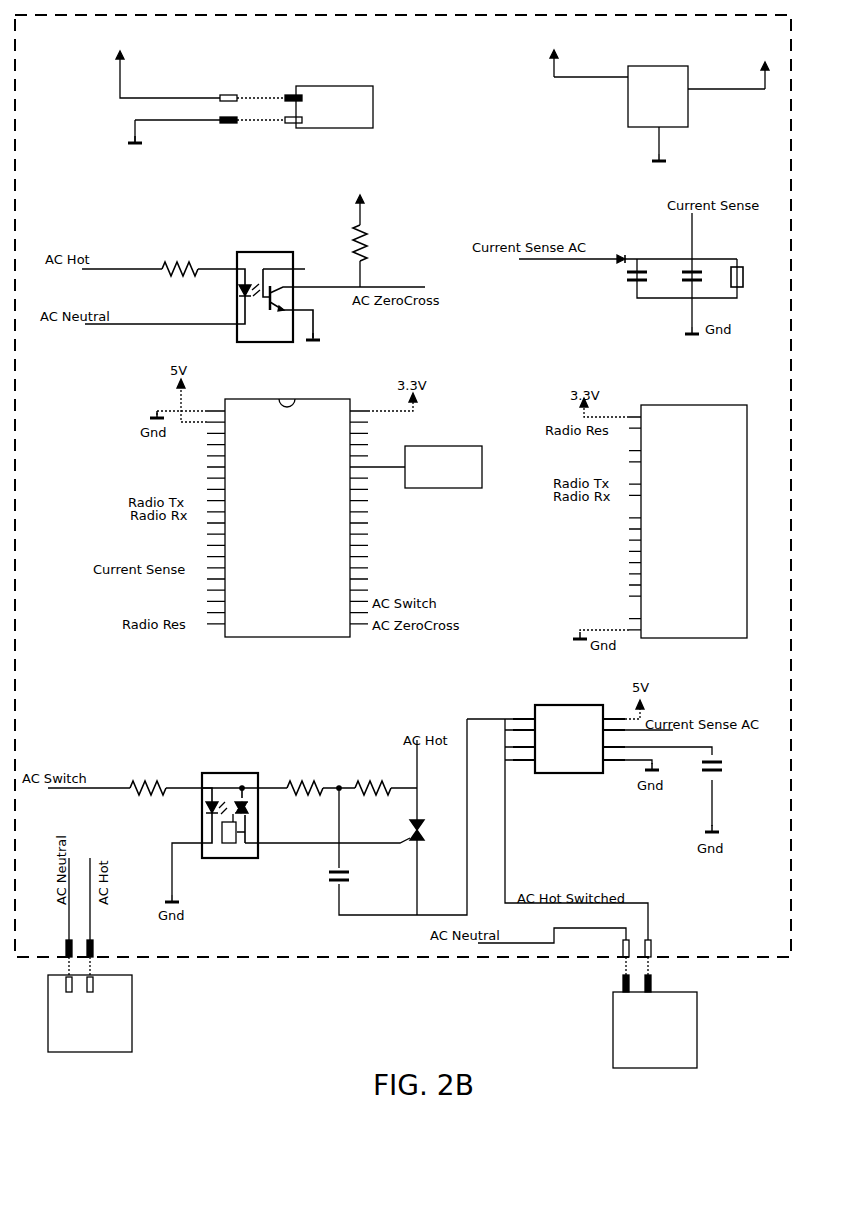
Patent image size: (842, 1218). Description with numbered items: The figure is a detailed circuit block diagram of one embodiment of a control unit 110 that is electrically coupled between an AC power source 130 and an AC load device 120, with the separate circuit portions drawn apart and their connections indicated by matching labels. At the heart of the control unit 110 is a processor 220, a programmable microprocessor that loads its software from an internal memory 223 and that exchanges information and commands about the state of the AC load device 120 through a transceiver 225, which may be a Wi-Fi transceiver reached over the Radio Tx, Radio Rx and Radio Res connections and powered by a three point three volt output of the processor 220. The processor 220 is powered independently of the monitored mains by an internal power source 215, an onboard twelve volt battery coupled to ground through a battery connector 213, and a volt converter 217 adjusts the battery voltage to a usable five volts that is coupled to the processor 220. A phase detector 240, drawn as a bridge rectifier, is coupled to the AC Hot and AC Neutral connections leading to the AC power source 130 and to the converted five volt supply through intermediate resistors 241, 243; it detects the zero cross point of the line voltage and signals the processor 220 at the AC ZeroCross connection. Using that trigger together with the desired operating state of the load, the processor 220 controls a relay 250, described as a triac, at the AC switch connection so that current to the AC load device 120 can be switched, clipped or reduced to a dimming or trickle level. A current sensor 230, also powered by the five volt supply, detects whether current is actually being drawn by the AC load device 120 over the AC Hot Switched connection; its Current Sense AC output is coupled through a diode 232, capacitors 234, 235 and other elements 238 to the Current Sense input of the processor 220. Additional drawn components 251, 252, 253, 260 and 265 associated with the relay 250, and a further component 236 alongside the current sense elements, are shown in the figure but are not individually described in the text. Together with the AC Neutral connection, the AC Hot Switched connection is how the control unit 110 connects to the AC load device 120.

The control unit 110 is at (392, 957).
The AC load device 120 is at (697, 1032).
The AC power source 130 is at (132, 1010).
The battery connector 213 is at (189, 97).
The internal power source 215 is at (334, 107).
The volt converter 217 is at (651, 66).
The processor 220 is at (306, 637).
The internal memory 223 is at (425, 467).
The transceiver 225 is at (683, 405).
The current sensor 230 is at (554, 705).
The diode 232 is at (623, 256).
The capacitor 234 is at (645, 272).
The capacitor 235 is at (722, 770).
The capacitor 236 is at (701, 272).
The other elements 238 is at (745, 275).
The phase detector 240 is at (261, 252).
The intermediate resistor 241 is at (177, 265).
The intermediate resistor 243 is at (370, 236).
The relay 250 is at (241, 772).
The resistor 251 is at (148, 785).
The resistor 252 is at (305, 785).
The resistor 253 is at (373, 785).
The triac 260 is at (425, 826).
The capacitor 265 is at (350, 882).